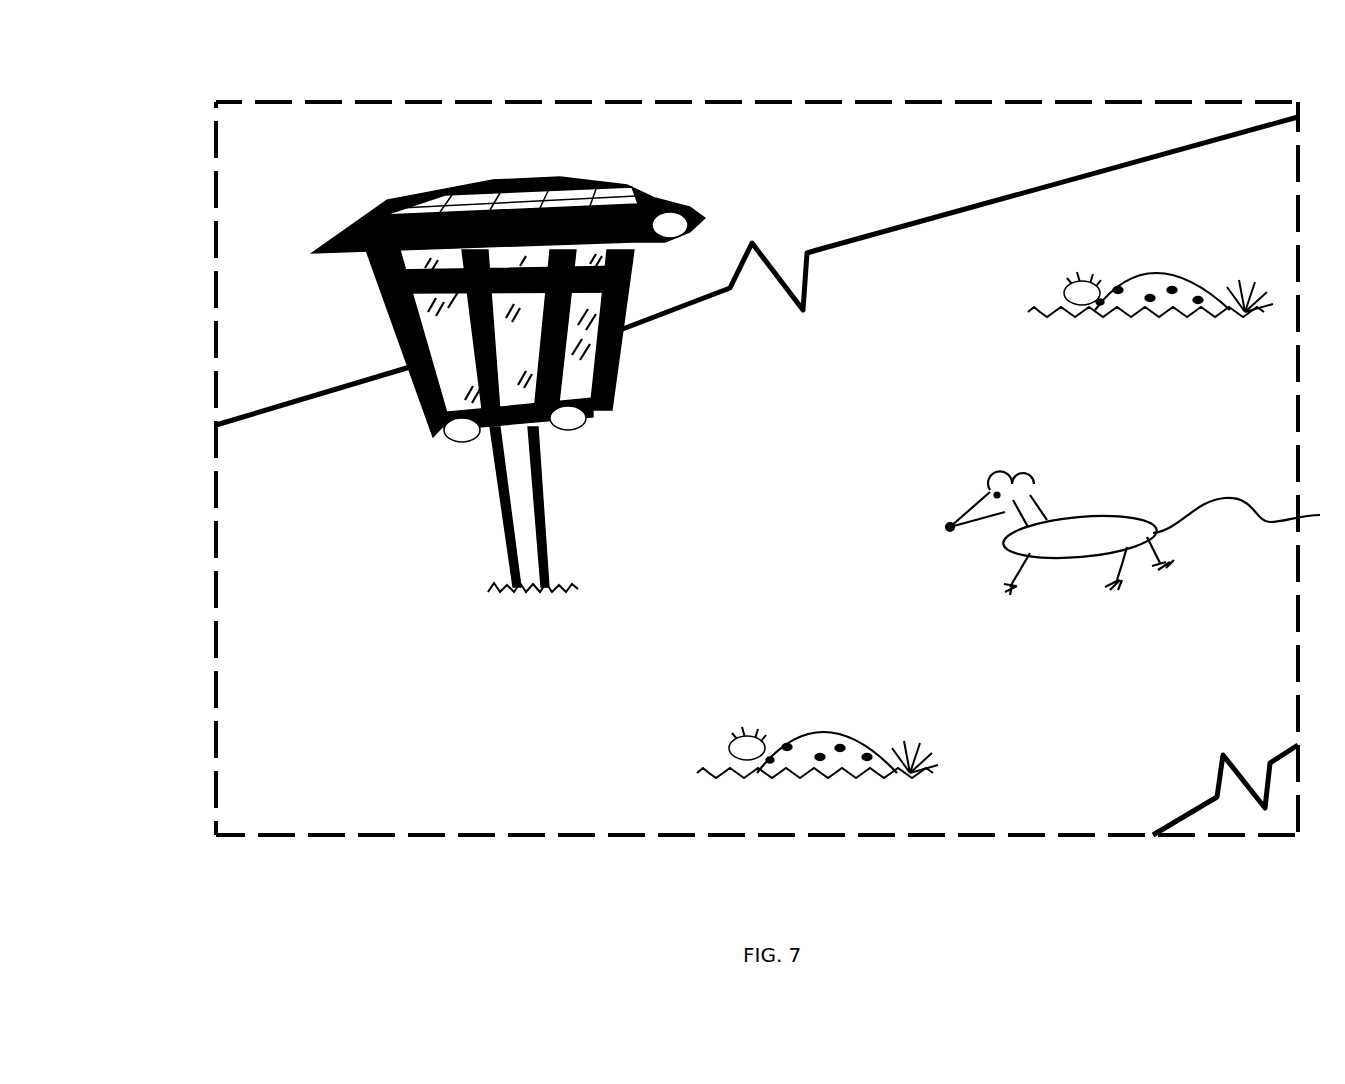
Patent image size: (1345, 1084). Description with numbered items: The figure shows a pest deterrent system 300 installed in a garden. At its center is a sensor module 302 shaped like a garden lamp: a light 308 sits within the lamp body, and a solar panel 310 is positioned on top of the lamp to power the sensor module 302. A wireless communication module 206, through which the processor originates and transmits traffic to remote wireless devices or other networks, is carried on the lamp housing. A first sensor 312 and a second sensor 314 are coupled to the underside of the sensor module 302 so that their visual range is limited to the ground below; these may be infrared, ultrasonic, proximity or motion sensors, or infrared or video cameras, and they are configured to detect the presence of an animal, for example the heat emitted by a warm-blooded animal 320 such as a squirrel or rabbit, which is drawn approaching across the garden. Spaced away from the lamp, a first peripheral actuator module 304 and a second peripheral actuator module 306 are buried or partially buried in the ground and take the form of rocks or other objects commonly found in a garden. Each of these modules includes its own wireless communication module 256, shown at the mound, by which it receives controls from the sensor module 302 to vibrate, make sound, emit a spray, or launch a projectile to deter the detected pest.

The pest deterrent system 300 is at (175, 83).
The sensor module 302 is at (323, 232).
The solar panel 310 is at (558, 177).
The wireless communication module 206 is at (690, 233).
The light 308 is at (613, 345).
The first sensor 312 is at (575, 438).
The second sensor 314 is at (460, 447).
The second peripheral actuator module 306 is at (1168, 263).
The first peripheral actuator module 304 is at (862, 730).
The wireless communication module 256 is at (1077, 278).
The warm-blooded animal 320 is at (1093, 505).